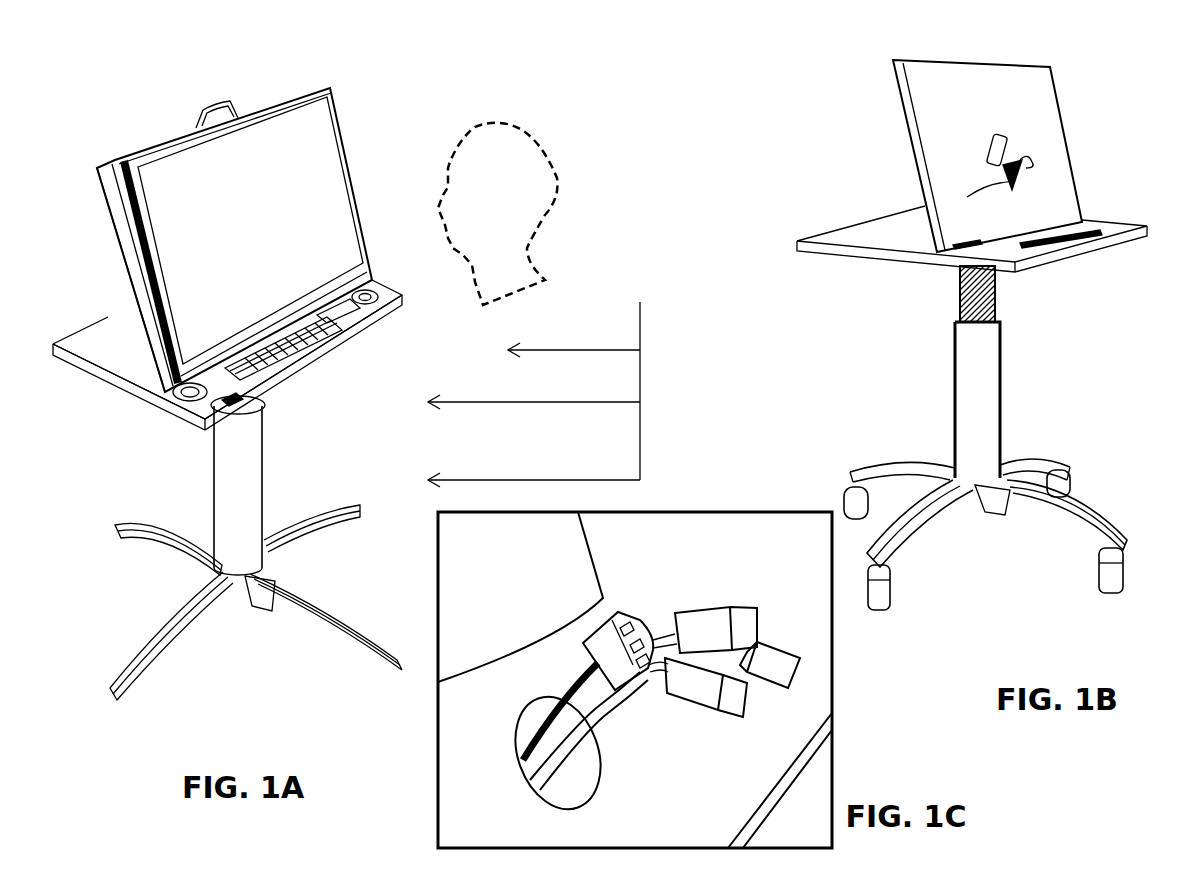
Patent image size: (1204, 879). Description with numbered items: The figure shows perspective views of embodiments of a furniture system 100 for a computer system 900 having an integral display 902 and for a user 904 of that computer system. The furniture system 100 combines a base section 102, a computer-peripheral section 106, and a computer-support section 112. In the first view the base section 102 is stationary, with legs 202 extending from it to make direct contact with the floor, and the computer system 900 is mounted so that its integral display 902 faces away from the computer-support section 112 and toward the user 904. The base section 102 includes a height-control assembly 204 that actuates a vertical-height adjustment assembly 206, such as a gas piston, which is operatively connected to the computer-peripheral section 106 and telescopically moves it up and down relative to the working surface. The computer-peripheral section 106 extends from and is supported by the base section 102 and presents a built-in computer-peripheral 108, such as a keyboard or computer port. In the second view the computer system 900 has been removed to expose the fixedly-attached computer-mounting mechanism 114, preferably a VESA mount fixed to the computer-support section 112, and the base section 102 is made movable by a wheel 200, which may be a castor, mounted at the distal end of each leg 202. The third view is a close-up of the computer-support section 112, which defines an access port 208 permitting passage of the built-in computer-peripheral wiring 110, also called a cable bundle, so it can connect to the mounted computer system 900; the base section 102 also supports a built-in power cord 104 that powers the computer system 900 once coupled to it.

In FIG. 1A, the furniture system 100 is at (544, 376).
In FIG. 1A, the base section 102 is at (265, 463).
In FIG. 1B, the base section 102 is at (1003, 373).
In FIG. 1C, the built-in power cord 104 is at (573, 678).
In FIG. 1A, the computer-peripheral section 106 is at (402, 297).
In FIG. 1B, the computer-peripheral section 106 is at (1085, 250).
In FIG. 1A, the built-in computer-peripheral 108 is at (318, 350).
In FIG. 1B, the built-in computer-peripheral 108 is at (1095, 225).
In FIG. 1B, the built-in computer-peripheral wiring 110 is at (980, 209).
In FIG. 1C, the built-in computer-peripheral wiring 110 is at (610, 713).
In FIG. 1A, the computer-support section 112 is at (98, 215).
In FIG. 1B, the computer-support section 112 is at (893, 78).
In FIG. 1C, the computer-support section 112 is at (662, 552).
In FIG. 1B, the fixedly-attached computer-mounting mechanism 114 is at (1010, 150).
In FIG. 1C, the fixedly-attached computer-mounting mechanism 114 is at (520, 597).
In FIG. 1B, the wheel 200 is at (892, 598).
In FIG. 1A, the leg 202 is at (122, 533).
In FIG. 1B, the leg 202 is at (908, 533).
In FIG. 1A, the height-control assembly 204 is at (268, 615).
In FIG. 1B, the height-control assembly 204 is at (1003, 507).
In FIG. 1A, the vertical-height adjustment assembly 206 is at (262, 412).
In FIG. 1B, the vertical-height adjustment assembly 206 is at (957, 297).
In FIG. 1C, the access port 208 is at (587, 793).
In FIG. 1A, the computer system 900 is at (340, 100).
In FIG. 1A, the integral display 902 is at (250, 230).
In FIG. 1A, the user 904 is at (498, 214).